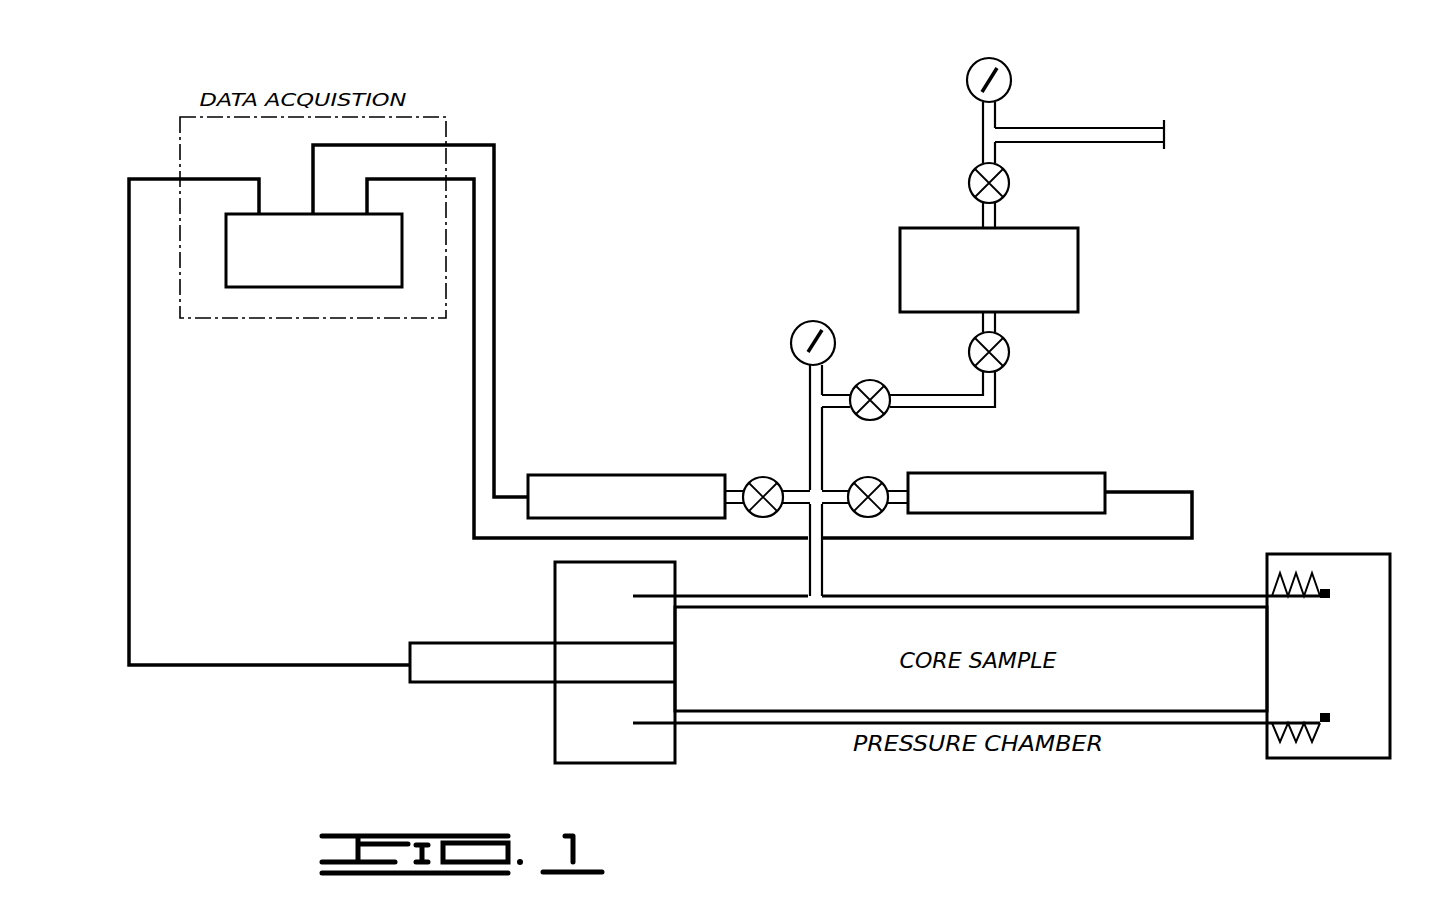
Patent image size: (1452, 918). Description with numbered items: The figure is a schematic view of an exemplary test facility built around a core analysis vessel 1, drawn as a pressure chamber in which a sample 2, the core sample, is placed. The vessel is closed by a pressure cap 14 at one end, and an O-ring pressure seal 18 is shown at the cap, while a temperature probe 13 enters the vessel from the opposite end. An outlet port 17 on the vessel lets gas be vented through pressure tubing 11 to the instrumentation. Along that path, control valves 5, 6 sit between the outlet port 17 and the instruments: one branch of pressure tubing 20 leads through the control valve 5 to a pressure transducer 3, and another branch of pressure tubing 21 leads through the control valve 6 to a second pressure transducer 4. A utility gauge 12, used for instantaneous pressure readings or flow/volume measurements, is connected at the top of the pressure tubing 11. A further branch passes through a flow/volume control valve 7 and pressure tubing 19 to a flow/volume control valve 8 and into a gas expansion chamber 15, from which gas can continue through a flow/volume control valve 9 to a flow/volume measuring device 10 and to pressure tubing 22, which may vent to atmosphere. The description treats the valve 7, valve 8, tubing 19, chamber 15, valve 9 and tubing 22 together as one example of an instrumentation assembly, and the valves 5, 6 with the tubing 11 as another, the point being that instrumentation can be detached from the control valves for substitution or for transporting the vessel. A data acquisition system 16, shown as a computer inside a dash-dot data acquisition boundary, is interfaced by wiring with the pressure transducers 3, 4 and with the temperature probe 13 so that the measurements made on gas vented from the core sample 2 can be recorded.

The core analysis vessel 1 is at (1113, 592).
The sample 2 is at (1185, 711).
The pressure transducer 3 is at (585, 475).
The pressure transducer 4 is at (1035, 470).
The control valve 5 is at (757, 518).
The control valve 6 is at (864, 518).
The flow/volume control valve 7 is at (882, 378).
The flow/volume control valve 8 is at (1013, 355).
The flow/volume control valve 9 is at (1008, 177).
The flow/volume measuring device 10 is at (980, 58).
The pressure tubing 11 is at (822, 568).
The utility gauge 12 is at (807, 322).
The temperature probe 13 is at (450, 640).
The pressure cap 14 is at (1392, 687).
The gas expansion chamber 15 is at (1080, 248).
The data acquisition system 16 is at (283, 287).
The outlet port 17 is at (816, 602).
The O-ring pressure seal 18 is at (1330, 597).
The pressure tubing 19 is at (1000, 397).
The pressure tubing 20 is at (731, 475).
The pressure tubing 21 is at (897, 470).
The pressure tubing 22 is at (1102, 127).